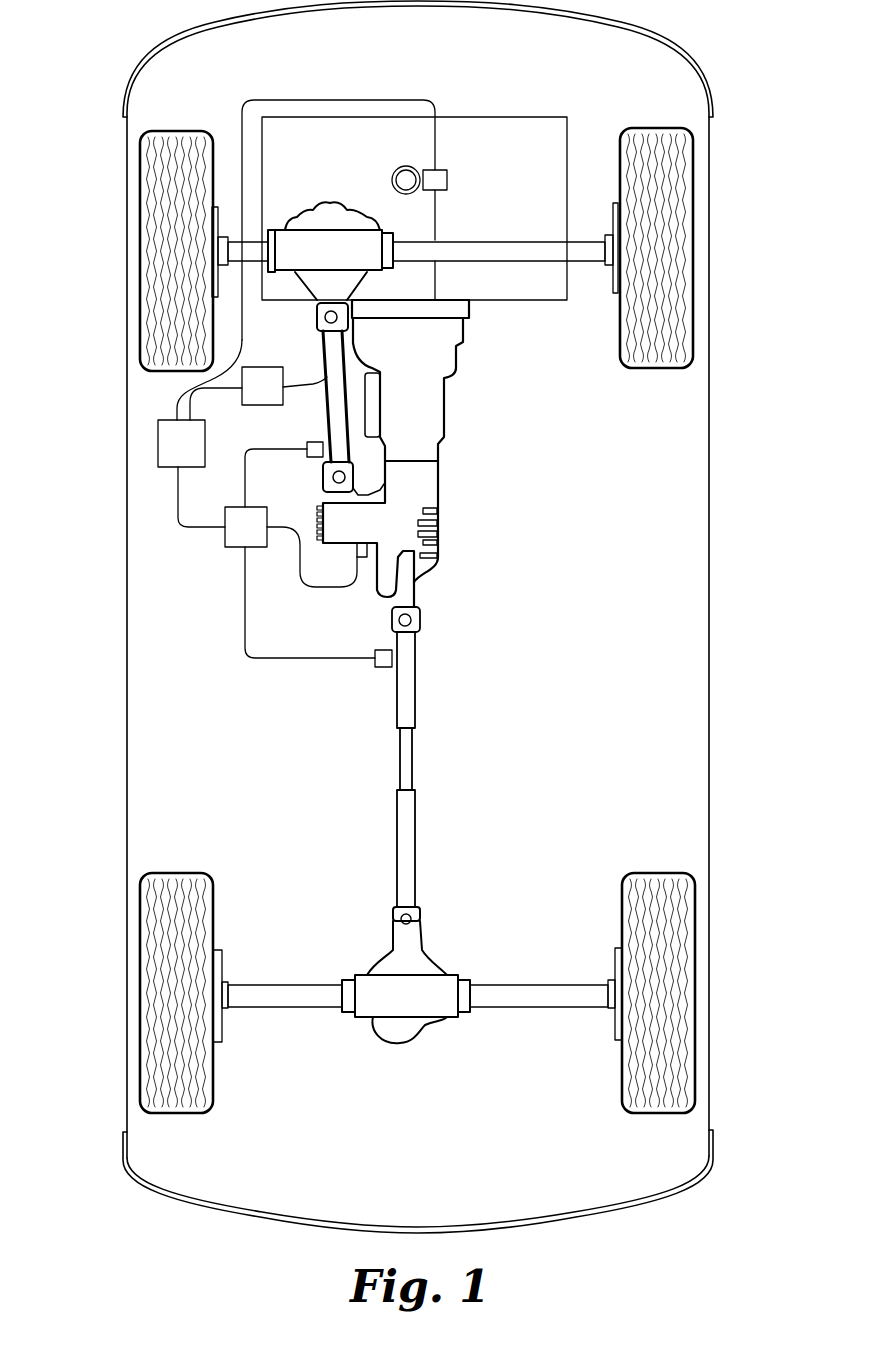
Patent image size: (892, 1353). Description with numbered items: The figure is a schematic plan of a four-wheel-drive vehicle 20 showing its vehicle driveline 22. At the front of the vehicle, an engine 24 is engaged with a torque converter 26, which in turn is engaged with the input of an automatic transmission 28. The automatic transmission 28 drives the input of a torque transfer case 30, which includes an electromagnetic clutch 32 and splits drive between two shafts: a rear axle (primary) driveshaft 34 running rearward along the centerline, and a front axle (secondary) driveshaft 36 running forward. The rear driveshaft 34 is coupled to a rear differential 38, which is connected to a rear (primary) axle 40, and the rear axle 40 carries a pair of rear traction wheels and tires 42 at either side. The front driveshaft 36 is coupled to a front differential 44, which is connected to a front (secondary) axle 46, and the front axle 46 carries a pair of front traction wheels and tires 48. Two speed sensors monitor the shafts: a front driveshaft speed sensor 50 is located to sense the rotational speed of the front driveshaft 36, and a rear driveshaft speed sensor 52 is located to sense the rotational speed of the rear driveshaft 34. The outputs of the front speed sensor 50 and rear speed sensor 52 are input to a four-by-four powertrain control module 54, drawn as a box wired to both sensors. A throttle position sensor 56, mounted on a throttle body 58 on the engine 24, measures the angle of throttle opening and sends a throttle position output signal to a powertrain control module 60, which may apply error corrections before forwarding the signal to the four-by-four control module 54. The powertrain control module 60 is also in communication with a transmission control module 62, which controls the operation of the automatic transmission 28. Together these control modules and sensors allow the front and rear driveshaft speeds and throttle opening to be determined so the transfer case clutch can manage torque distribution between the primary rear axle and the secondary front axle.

The vehicle 20 is at (722, 403).
The vehicle driveline 22 is at (423, 453).
The engine 24 is at (515, 117).
The torque converter 26 is at (470, 312).
The automatic transmission 28 is at (441, 402).
The torque transfer case 30 is at (443, 492).
The electromagnetic clutch 32 is at (443, 525).
The rear axle (primary) driveshaft 34 is at (417, 700).
The front axle (secondary) driveshaft 36 is at (327, 353).
The rear differential 38 is at (405, 1045).
The rear (primary) axle 40 is at (538, 986).
The rear traction wheels and tires 42 is at (140, 968).
The front differential 44 is at (330, 214).
The front (secondary) axle 46 is at (505, 238).
The front traction wheels and tires 48 is at (140, 205).
The front driveshaft speed sensor 50 is at (316, 442).
The rear driveshaft speed sensor 52 is at (386, 668).
The 4x4 powertrain control module 54 is at (238, 548).
The throttle position sensor 56 is at (448, 184).
The throttle body 58 is at (395, 169).
The powertrain control module (PCM) 60 is at (171, 468).
The transmission control module 62 is at (272, 407).